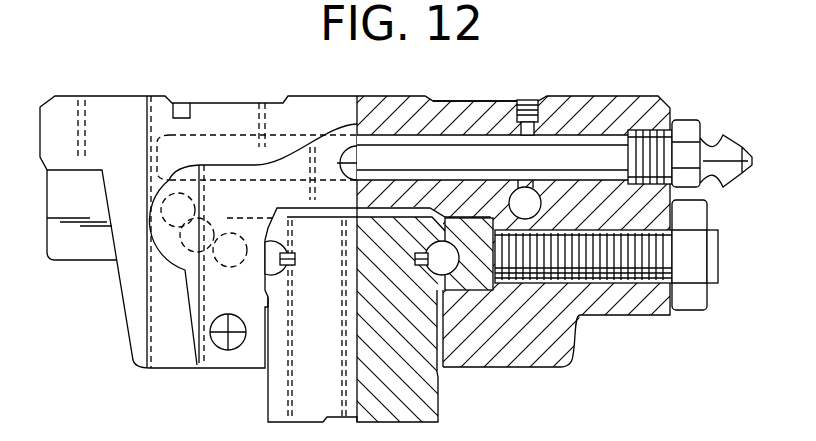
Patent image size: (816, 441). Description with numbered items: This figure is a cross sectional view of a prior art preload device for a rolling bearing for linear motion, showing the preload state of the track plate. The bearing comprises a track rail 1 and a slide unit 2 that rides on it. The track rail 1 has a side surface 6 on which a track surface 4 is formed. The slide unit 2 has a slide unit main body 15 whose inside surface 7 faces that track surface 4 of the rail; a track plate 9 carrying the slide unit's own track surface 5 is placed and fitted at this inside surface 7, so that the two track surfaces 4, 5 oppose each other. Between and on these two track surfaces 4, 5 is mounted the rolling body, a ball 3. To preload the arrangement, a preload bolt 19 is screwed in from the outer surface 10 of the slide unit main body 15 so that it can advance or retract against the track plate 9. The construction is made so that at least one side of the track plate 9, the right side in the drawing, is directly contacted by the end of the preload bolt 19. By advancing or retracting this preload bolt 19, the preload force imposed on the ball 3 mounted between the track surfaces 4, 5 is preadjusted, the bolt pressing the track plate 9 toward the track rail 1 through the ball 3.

The track rail 1 is at (280, 400).
The slide unit 2 is at (398, 90).
The ball 3 is at (272, 270).
The track surface 4 is at (440, 278).
The track surface 5 is at (447, 240).
The side surface 6 is at (448, 282).
The inside surface 7 is at (445, 350).
The track plate 9 is at (270, 278).
The outer surface 10 is at (675, 200).
The slide unit main body 15 is at (437, 99).
The preload bolt 19 is at (648, 278).